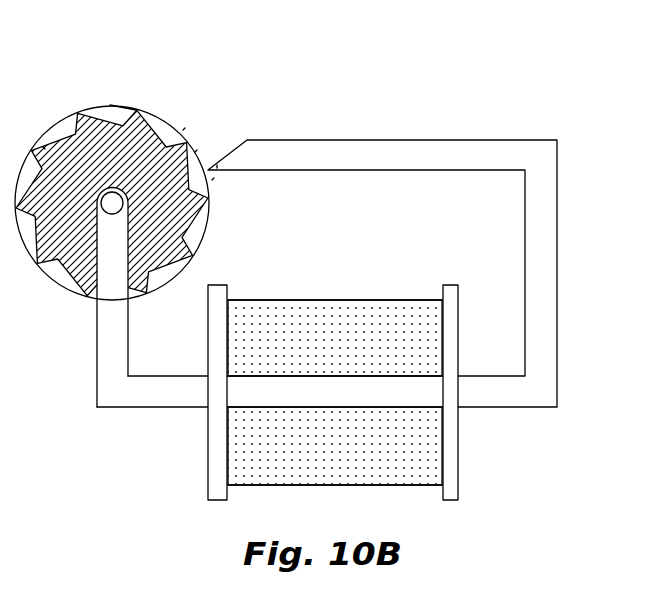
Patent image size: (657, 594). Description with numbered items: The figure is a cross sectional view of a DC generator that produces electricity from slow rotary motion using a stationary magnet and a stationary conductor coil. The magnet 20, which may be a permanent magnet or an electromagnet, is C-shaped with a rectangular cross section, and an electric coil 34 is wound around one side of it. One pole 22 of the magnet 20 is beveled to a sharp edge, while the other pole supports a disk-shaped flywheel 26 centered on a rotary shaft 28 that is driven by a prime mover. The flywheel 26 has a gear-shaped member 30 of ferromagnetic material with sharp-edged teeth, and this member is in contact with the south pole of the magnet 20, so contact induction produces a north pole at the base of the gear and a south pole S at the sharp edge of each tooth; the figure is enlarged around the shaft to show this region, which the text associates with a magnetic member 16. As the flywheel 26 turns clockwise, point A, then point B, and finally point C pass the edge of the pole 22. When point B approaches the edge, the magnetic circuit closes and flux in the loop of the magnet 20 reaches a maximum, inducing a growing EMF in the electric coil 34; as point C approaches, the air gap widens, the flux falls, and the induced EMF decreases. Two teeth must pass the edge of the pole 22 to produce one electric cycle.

The magnetic member 16 is at (43, 147).
The magnet 20 is at (483, 153).
The pole 22 is at (217, 165).
The flywheel 26 is at (68, 92).
The rotary shaft 28 is at (108, 198).
The gear-shaped member 30 is at (110, 105).
The electric coil 34 is at (287, 300).
The point A is at (212, 180).
The point B is at (195, 152).
The point C is at (183, 130).
The south pole S is at (112, 298).